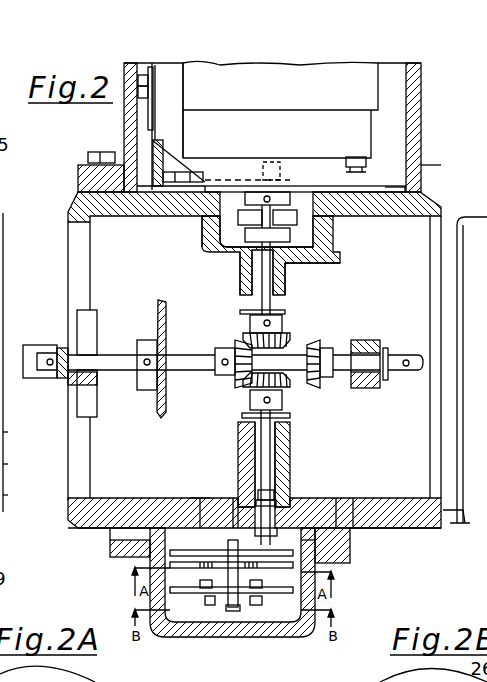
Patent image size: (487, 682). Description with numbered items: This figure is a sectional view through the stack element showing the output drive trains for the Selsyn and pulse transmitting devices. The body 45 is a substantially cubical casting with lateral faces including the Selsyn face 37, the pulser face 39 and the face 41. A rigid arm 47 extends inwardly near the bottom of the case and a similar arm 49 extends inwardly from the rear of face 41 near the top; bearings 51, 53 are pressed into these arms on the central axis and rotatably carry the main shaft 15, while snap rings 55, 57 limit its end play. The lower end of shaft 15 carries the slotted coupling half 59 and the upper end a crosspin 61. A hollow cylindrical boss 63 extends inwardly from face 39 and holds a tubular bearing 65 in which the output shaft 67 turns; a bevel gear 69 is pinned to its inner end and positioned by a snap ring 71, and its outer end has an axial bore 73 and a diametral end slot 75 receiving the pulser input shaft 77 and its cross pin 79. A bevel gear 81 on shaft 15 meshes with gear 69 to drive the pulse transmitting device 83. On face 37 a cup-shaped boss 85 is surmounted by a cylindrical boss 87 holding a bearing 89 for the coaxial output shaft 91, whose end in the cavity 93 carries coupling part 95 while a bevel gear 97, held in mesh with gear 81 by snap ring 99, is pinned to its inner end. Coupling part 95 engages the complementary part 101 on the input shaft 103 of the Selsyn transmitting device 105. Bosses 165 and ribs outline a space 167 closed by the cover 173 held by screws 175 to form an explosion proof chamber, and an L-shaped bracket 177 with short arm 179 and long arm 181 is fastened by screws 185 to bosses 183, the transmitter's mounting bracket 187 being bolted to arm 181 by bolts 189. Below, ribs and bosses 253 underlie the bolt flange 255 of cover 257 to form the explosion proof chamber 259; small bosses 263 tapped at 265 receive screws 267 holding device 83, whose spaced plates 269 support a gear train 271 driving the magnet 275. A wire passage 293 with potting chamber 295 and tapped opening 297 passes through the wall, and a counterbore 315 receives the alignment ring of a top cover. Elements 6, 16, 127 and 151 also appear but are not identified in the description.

The housing 6 is at (62, 512).
The main shaft 15 is at (190, 355).
The cover wall 16 is at (440, 168).
The Selsyn face 37 is at (83, 163).
The pulser face 39 is at (395, 531).
The tachometer face 41 is at (7, 248).
The body 45 is at (436, 191).
The rigid arm 47 is at (93, 382).
The arm 49 is at (360, 390).
The bearing 51 is at (107, 342).
The bearing 53 is at (366, 340).
The snap ring 55 is at (62, 377).
The snap ring 57 is at (386, 381).
The slotted coupling half 59 is at (45, 348).
The crosspin 61 is at (408, 355).
The hollow cylindrical boss 63 is at (290, 467).
The tubular bearing 65 is at (290, 440).
The output shaft 67 is at (262, 438).
The bevel gear 69 is at (276, 390).
The snap ring 71 is at (243, 413).
The axial bore 73 is at (285, 485).
The diametral end slot 75 is at (290, 507).
The pulser input shaft 77 is at (240, 497).
The cross pin 79 is at (233, 497).
The bevel gear 81 is at (240, 375).
The pulse transmitting device 83 is at (217, 604).
The cup-shaped boss 85 is at (333, 228).
The hollow cylindrical boss 87 is at (290, 278).
The bearing 89 is at (290, 292).
The output shaft 91 is at (243, 278).
The cavity 93 is at (233, 240).
The coupling part 95 is at (281, 238).
The bevel gear 97 is at (276, 336).
The snap ring 99 is at (243, 310).
The complementary coupling part 101 is at (320, 190).
The input shaft 103 is at (322, 167).
The Selsyn transmitting device 105 is at (283, 95).
The disk 127 is at (160, 305).
The bevel gear 151 is at (316, 348).
The bosses 165 is at (78, 192).
The space 167 is at (385, 187).
The cover 173 is at (415, 80).
The screws 175 is at (97, 153).
The L-shaped bracket 177 is at (185, 95).
The short arm 179 is at (248, 157).
The long arm 181 is at (168, 125).
The bosses 183 is at (163, 191).
The screws 185 is at (183, 167).
The mounting bracket 187 is at (152, 63).
The bolts 189 is at (147, 85).
The ribs and bosses 253 is at (353, 507).
The bolt flange 255 is at (345, 560).
The cover 257 is at (310, 638).
The explosion proof chamber 259 is at (263, 615).
The small bosses 263 is at (200, 507).
The tapped holes 265 is at (200, 503).
The screws 267 is at (230, 611).
The plates 269 is at (165, 593).
The gear train 271 is at (348, 563).
The magnet 275 is at (112, 558).
The wire passage 293 is at (6, 432).
The potting chamber 295 is at (6, 464).
The tapped conduit receiving opening 297 is at (8, 495).
The counterbore 315 is at (461, 512).